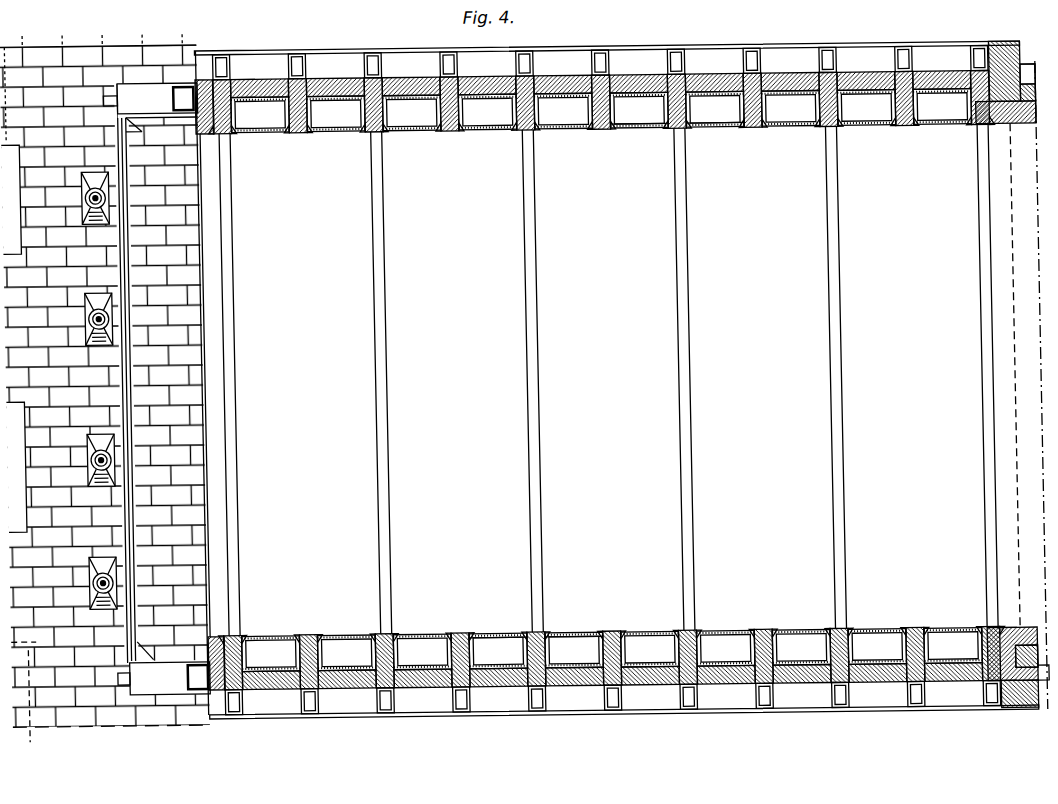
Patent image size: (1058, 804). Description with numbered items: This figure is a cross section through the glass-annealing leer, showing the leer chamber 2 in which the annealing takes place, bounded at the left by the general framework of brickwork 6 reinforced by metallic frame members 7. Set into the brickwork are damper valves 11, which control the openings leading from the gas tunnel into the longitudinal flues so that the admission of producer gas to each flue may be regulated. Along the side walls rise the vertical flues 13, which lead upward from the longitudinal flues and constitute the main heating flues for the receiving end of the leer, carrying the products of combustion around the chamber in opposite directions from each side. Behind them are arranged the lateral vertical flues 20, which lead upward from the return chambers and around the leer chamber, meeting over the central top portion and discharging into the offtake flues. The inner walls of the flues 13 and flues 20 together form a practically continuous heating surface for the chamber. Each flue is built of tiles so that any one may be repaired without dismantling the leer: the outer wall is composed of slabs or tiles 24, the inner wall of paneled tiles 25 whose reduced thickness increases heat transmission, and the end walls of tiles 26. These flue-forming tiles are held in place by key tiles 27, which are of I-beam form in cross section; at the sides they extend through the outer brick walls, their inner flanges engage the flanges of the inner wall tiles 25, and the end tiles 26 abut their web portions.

The leer chamber 2 is at (608, 379).
The brickwork 6 is at (288, 700).
The metallic frame members 7 is at (401, 52).
The damper valve 11 is at (81, 590).
The vertical flue 13 is at (492, 118).
The lateral vertical flue 20 is at (571, 118).
The outer wall tile 24 is at (712, 96).
The inner wall tile 25 is at (717, 123).
The end wall tile 26 is at (694, 128).
The key tile 27 is at (290, 90).